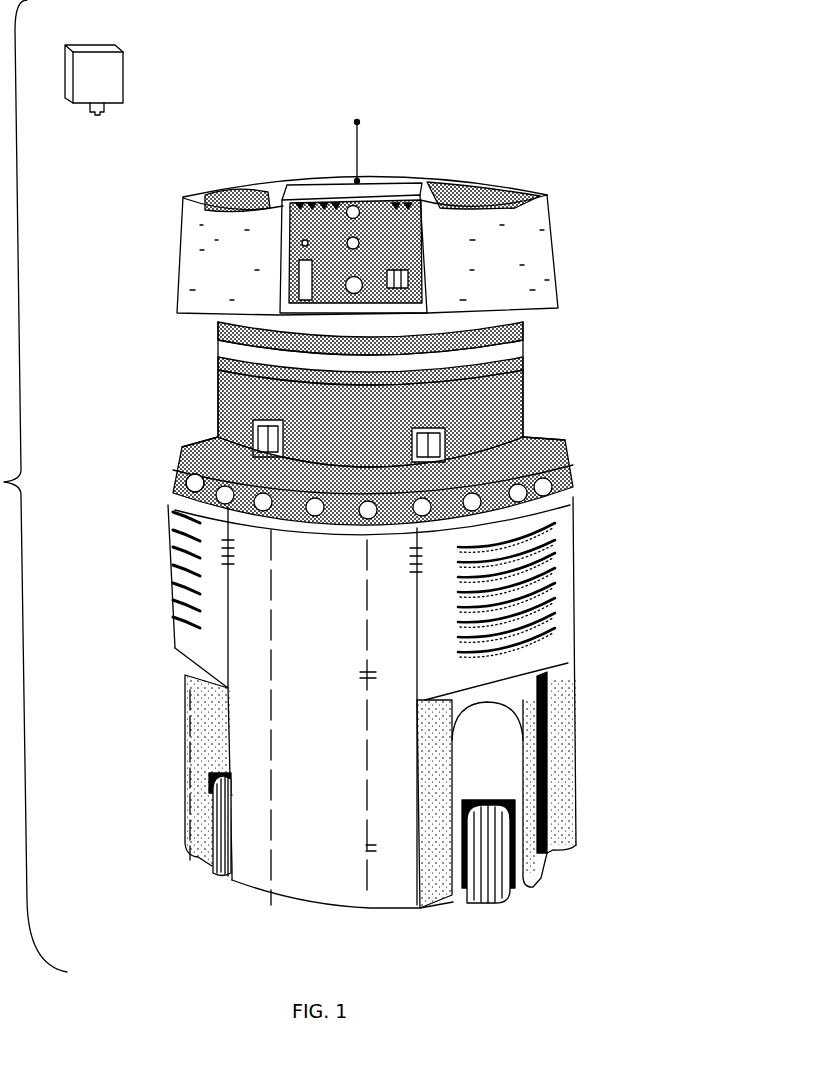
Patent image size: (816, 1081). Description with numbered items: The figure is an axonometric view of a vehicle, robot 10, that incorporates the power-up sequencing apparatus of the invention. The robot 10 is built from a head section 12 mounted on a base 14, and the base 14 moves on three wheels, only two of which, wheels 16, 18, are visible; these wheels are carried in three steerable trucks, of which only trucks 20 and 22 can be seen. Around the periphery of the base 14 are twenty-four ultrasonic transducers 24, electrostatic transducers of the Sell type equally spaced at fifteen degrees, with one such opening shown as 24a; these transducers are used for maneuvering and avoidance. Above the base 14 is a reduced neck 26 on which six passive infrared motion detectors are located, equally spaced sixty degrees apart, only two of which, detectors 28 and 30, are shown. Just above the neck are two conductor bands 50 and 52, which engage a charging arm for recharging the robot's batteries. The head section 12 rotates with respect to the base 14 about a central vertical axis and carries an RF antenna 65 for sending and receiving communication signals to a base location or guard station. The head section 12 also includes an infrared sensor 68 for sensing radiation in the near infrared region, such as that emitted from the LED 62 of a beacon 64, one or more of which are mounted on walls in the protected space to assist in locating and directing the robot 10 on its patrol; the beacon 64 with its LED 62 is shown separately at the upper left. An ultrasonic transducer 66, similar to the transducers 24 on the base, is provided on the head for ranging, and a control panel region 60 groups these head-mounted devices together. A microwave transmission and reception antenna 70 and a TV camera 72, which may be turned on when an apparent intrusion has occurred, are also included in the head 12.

The robot 10 is at (688, 88).
The head section 12 is at (555, 223).
The base 14 is at (573, 600).
The wheel 16 is at (210, 867).
The wheel 18 is at (520, 900).
The steerable truck 20 is at (193, 750).
The steerable truck 22 is at (510, 770).
The ultrasonic transducers 24 is at (560, 503).
The opening 24a is at (182, 497).
The reduced neck 26 is at (525, 418).
The passive infrared motion detector 28 is at (213, 428).
The passive infrared motion detector 30 is at (557, 440).
The conductor band 50 is at (523, 365).
The conductor band 52 is at (523, 321).
The indicator light 60 is at (372, 190).
The LED 62 is at (113, 105).
The beacon 64 is at (100, 48).
The RF antenna 65 is at (362, 142).
The ultrasonic transducer 66 is at (345, 242).
The infrared sensor 68 is at (410, 276).
The microwave transmission and reception antenna 70 is at (300, 286).
The TV camera 72 is at (422, 232).